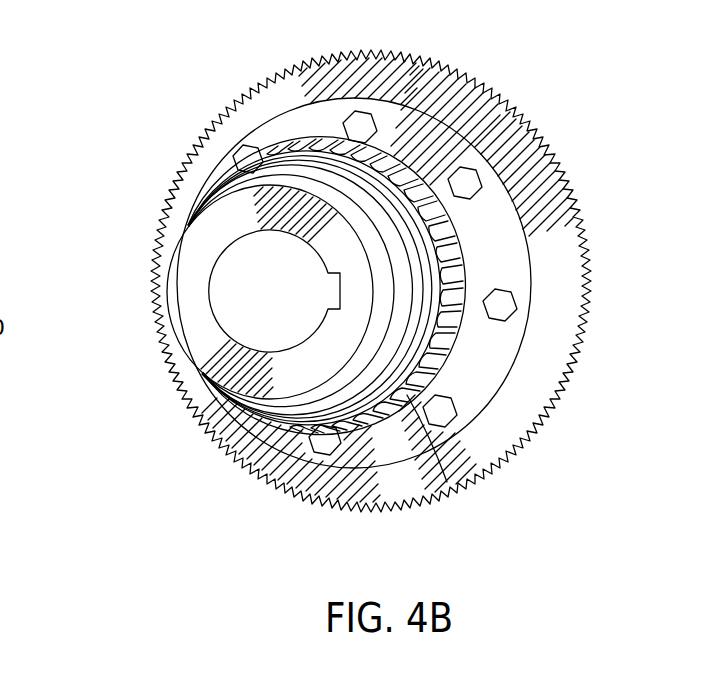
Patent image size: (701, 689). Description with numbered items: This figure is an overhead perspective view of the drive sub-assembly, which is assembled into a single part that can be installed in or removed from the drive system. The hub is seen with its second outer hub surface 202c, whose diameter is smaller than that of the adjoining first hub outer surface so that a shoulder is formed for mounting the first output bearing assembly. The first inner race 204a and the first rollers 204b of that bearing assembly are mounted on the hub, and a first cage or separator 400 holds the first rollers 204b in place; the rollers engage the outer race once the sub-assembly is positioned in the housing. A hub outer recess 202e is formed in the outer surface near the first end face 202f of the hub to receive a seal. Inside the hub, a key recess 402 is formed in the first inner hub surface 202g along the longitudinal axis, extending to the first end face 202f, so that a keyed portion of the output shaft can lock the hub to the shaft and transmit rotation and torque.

The first cage or separator 400 is at (457, 480).
The key recess 402 is at (425, 258).
The second outer circumferential surface 202c is at (393, 348).
The hub outer recess 202e is at (387, 317).
The first end face 202f is at (195, 341).
The first inner hub surface 202g is at (325, 250).
The first inner race 204a is at (340, 440).
The first rollers 204b is at (363, 440).